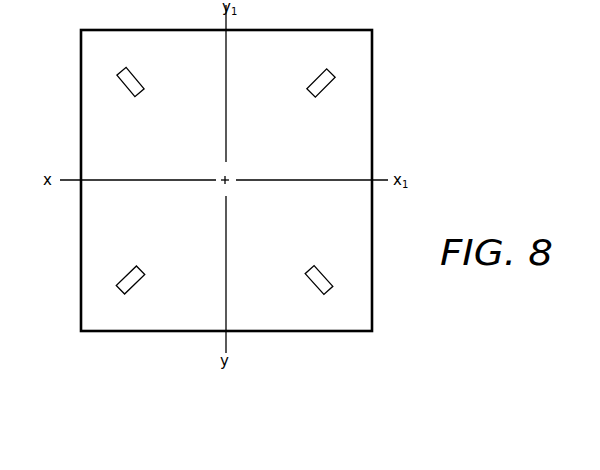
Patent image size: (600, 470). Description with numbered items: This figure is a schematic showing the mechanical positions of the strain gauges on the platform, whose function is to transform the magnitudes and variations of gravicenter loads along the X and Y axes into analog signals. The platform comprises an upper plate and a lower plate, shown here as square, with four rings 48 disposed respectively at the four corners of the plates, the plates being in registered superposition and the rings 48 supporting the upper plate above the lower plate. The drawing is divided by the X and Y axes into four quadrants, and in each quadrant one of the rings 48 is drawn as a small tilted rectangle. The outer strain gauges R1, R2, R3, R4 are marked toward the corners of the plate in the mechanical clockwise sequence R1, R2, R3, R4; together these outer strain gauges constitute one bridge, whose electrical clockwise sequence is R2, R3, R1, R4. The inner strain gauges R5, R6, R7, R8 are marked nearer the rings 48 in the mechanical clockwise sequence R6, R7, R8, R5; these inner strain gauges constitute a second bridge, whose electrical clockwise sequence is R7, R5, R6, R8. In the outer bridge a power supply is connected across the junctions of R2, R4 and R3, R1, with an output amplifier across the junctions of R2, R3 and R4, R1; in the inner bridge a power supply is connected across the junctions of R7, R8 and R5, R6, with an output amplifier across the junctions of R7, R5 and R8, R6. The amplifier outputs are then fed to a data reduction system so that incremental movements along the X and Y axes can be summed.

The rings 48 is at (225, 185).
The outer strain gauge R1 is at (102, 310).
The outer strain gauge R2 is at (102, 54).
The outer strain gauge R3 is at (354, 54).
The outer strain gauge R4 is at (349, 312).
The inner strain gauge R5 is at (140, 269).
The inner strain gauge R6 is at (141, 92).
The inner strain gauge R7 is at (315, 94).
The inner strain gauge R8 is at (309, 268).